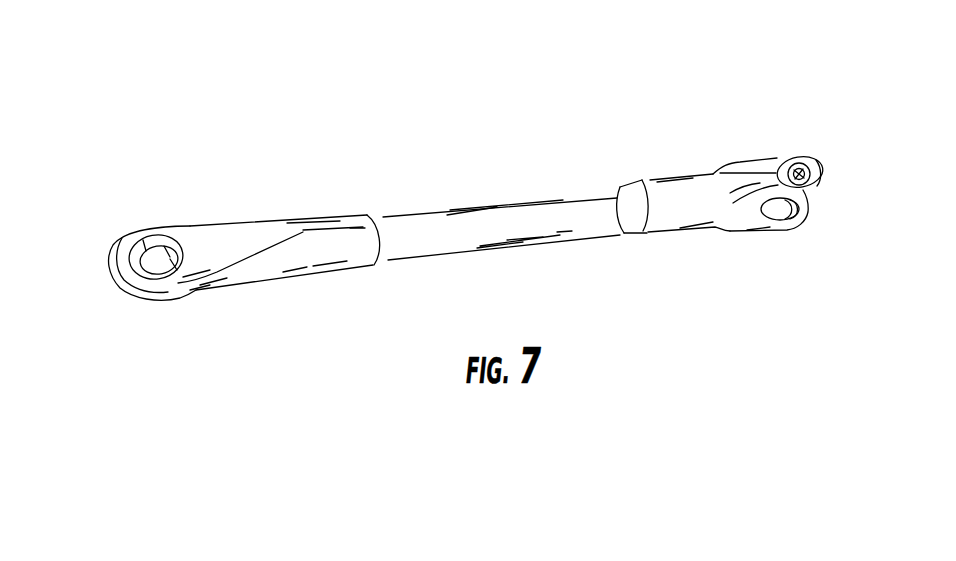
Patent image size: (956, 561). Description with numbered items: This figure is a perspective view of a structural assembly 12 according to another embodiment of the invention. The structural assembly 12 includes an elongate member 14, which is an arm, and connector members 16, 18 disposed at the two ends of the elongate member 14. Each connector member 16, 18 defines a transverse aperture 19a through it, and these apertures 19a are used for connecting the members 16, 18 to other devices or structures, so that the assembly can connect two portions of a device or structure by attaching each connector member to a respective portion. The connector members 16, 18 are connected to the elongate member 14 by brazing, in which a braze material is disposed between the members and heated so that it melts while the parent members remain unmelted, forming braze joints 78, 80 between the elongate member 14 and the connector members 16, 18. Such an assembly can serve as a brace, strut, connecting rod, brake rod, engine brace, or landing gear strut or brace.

The structural assembly 12 is at (468, 107).
The elongate member 14 is at (487, 213).
The connector member 16 is at (192, 228).
The connector member 18 is at (737, 191).
The transverse aperture 19a is at (166, 277).
The braze joint 78 is at (378, 230).
The braze joint 80 is at (613, 197).